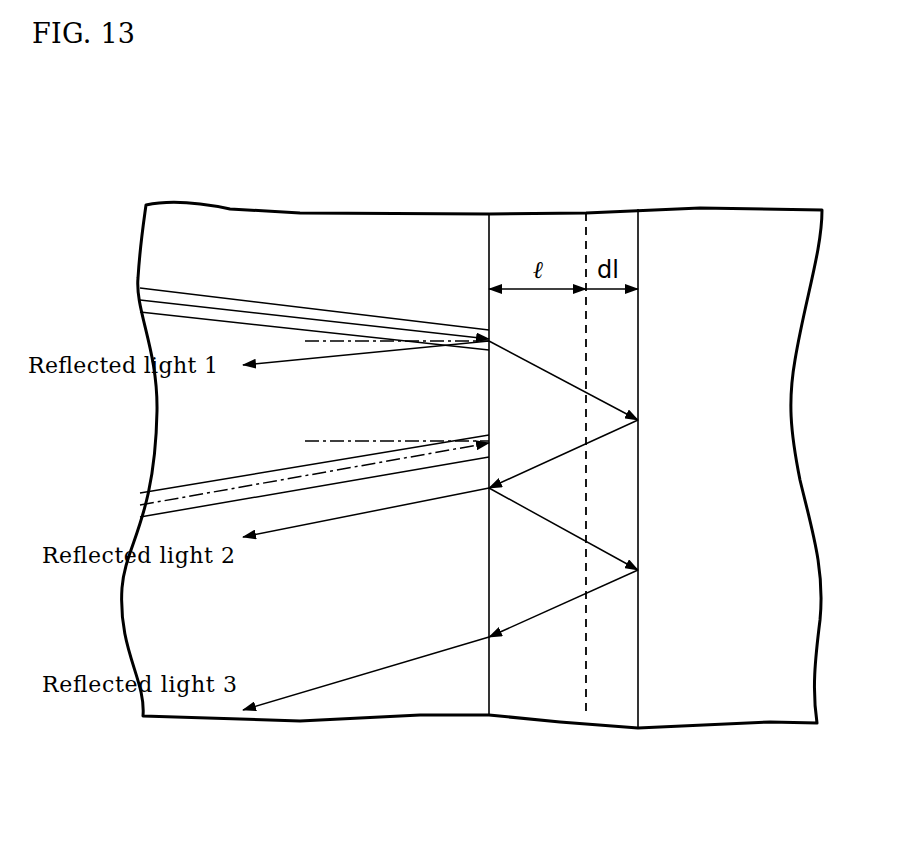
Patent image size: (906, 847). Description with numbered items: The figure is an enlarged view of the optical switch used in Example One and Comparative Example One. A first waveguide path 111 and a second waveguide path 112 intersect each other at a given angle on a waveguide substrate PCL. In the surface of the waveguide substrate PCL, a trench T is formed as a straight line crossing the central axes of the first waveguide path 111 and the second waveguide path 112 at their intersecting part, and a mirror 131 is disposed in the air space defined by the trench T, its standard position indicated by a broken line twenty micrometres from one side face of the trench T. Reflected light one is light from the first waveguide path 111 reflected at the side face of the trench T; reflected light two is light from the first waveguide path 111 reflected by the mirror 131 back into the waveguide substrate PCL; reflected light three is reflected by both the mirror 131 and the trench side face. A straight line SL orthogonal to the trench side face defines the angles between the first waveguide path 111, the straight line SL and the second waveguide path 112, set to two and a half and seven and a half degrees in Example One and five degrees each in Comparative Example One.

The first waveguide path 111 is at (225, 298).
The second waveguide path 112 is at (217, 478).
The mirror 131 is at (722, 708).
The waveguide substrate PCL is at (320, 252).
The straight line SL is at (320, 342).
The trench T is at (532, 700).